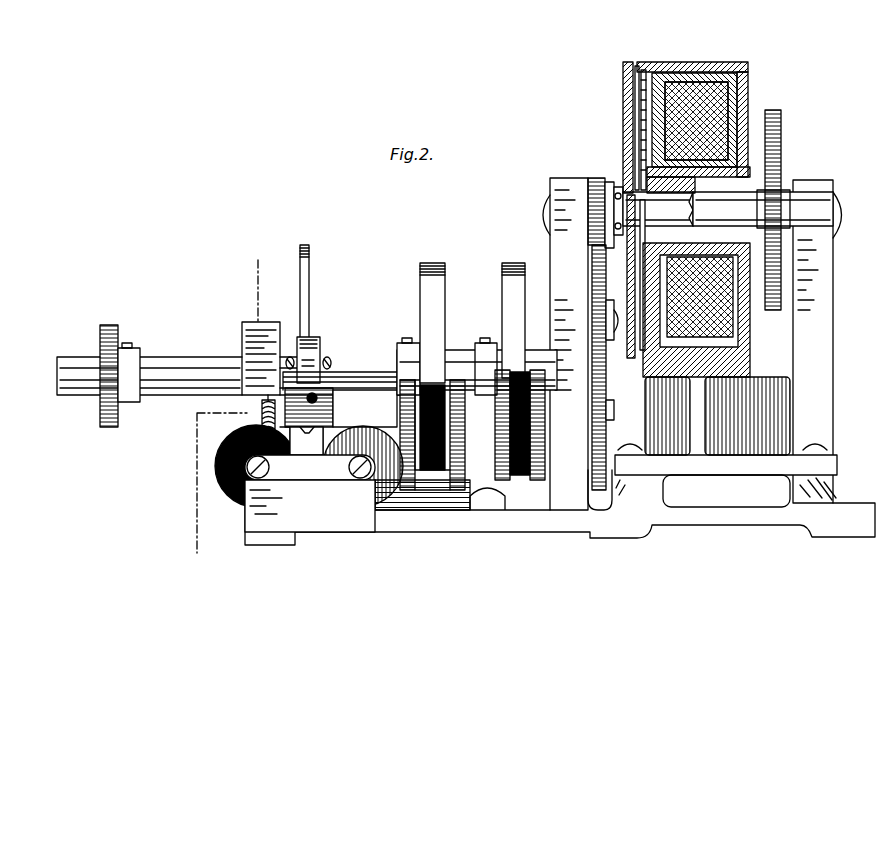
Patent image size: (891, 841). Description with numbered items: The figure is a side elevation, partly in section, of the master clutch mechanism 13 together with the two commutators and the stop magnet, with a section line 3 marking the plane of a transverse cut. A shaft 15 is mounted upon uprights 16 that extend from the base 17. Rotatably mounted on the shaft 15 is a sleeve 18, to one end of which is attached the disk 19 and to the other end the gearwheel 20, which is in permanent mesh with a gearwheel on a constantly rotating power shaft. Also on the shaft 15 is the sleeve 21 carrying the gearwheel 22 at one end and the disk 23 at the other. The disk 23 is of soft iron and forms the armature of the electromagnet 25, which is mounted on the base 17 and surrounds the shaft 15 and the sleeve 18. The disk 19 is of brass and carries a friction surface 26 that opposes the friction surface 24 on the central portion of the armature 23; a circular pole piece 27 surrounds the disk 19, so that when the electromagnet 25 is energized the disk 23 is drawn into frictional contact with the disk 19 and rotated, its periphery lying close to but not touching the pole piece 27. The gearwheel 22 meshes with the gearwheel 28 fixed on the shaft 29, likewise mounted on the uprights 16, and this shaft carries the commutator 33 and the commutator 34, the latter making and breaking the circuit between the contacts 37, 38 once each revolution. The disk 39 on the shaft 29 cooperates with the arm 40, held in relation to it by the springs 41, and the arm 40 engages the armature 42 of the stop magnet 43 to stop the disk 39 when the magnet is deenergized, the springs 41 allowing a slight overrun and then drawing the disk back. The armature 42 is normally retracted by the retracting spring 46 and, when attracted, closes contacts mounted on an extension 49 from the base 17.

The section line 3- 3 is at (234, 419).
The master clutch mechanism 13 is at (686, 108).
The shaft 15 is at (658, 209).
The uprights 16 is at (550, 196).
The base 17 is at (721, 524).
The sleeve 18 is at (763, 209).
The disk 19 is at (684, 68).
The gearwheel 20 is at (781, 149).
The sleeve 21 is at (612, 186).
The gearwheel 22 is at (593, 181).
The disk or armature 23 is at (637, 68).
The friction surface 24 is at (630, 110).
The electromagnet 25 is at (740, 108).
The friction surface 26 is at (640, 298).
The circular pole piece 27 is at (662, 72).
The gearwheel 28 is at (592, 274).
The shaft 29 is at (457, 358).
The commutator 33 is at (437, 269).
The commutator 34 is at (518, 269).
The contact 37 is at (500, 399).
The contact 38 is at (501, 436).
The disk 39 is at (311, 307).
The arm 40 is at (321, 356).
The springs 41 is at (336, 381).
The armature 42 is at (327, 421).
The stop magnet 43 is at (229, 498).
The retracting spring 46 is at (264, 421).
The extension 49 is at (310, 493).